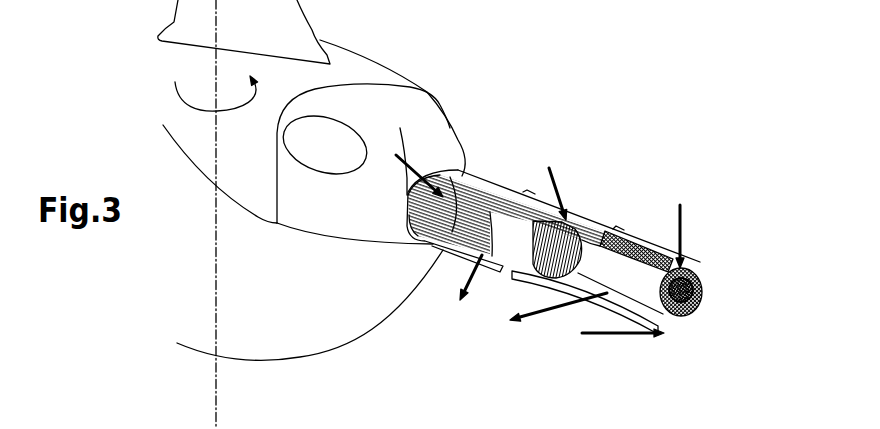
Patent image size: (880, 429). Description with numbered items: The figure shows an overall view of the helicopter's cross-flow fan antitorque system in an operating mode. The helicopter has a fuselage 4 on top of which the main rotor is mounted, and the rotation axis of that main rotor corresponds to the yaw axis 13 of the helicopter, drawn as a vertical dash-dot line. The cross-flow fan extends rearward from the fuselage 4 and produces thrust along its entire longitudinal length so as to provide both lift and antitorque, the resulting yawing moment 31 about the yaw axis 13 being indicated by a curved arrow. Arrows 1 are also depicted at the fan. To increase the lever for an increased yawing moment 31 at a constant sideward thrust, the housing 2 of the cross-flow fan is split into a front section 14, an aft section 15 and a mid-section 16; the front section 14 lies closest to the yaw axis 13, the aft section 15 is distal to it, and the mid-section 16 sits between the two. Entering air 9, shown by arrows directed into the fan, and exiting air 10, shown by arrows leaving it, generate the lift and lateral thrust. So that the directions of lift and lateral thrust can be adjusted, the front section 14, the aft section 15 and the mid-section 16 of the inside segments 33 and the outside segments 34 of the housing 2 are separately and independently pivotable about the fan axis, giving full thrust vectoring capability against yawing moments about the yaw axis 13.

The cable end / connector 1 is at (705, 289).
The housing 2 is at (675, 323).
The fuselage 4 is at (376, 74).
The entering air 9 is at (409, 160).
The exiting air 10 is at (467, 273).
The yaw axis 13 is at (216, 282).
The front section 14 is at (484, 187).
The aft section 15 is at (704, 269).
The mid-section 16 is at (494, 265).
The yawing moment 31 is at (170, 98).
The inside segments 33 is at (648, 276).
The outside segments 34 is at (681, 290).